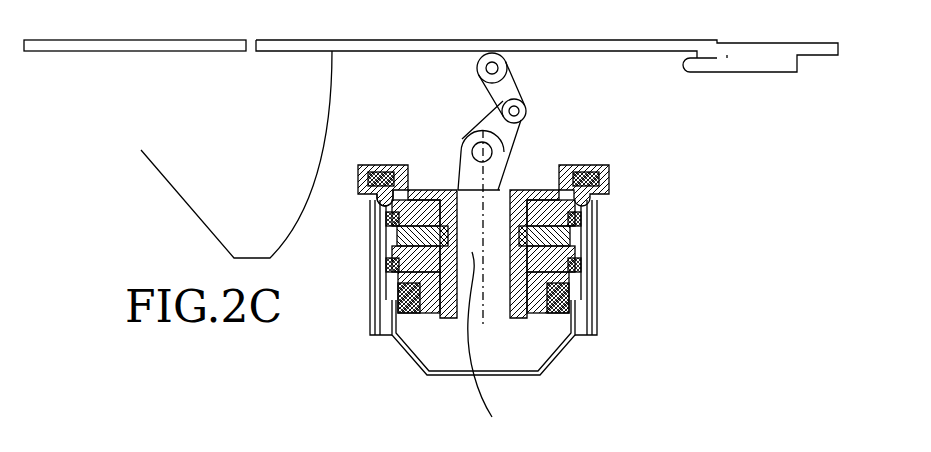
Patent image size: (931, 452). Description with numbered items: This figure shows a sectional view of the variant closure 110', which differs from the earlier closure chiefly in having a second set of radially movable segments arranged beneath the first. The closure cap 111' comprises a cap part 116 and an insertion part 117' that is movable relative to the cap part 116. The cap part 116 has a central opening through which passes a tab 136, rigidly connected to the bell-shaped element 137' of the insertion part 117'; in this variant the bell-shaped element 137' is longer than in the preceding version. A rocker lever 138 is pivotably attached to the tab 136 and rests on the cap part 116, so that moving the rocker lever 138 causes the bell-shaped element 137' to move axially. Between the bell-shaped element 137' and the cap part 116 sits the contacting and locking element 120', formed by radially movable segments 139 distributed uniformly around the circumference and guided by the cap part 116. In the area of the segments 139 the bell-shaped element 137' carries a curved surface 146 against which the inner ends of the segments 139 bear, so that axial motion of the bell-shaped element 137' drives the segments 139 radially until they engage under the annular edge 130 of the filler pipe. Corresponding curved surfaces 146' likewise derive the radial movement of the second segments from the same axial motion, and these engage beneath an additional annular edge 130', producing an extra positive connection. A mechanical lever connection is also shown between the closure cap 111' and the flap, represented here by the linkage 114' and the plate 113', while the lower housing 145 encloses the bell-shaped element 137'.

The closure 110' is at (803, 439).
The closure cap 111' is at (624, 214).
The mounting plate 113' is at (431, 230).
The link arm 114' is at (529, 58).
The cap part 116 is at (598, 172).
The insertion part 117' is at (578, 330).
The flange 120' is at (384, 163).
The annular edge 130 is at (267, 154).
The annular edge 130' is at (323, 216).
The tab 136 is at (462, 165).
The bell-shaped element 137' is at (400, 298).
The rocker lever 138 is at (512, 134).
The radially movable segments 139 is at (598, 203).
The cup 145 is at (430, 358).
The curved surface 146 is at (483, 240).
The curved surfaces 146' is at (498, 345).